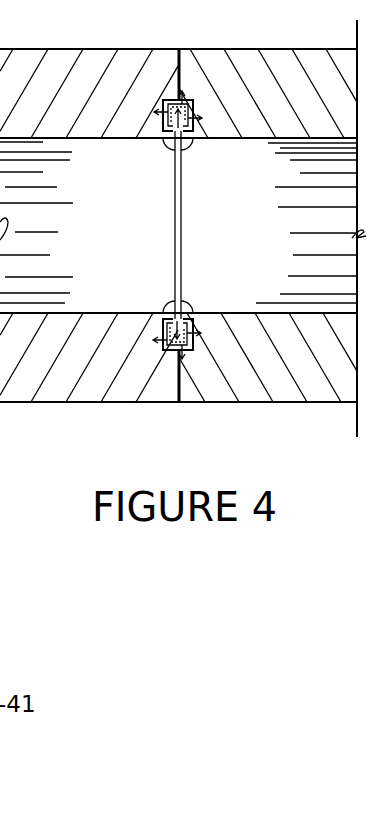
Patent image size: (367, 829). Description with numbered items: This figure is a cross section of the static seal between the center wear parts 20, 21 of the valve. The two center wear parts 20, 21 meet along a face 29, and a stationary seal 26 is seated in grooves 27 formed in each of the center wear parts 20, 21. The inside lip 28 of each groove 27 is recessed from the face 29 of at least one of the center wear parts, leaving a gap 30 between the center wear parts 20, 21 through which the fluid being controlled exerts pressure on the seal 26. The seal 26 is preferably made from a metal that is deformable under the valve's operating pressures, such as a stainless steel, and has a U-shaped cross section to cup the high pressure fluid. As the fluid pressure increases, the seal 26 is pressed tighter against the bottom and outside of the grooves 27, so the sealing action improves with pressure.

The center wear part 20 is at (75, 403).
The center wear part 21 is at (208, 403).
The stationary seal 26 is at (163, 117).
The groove 27 is at (163, 104).
The inside lip 28 is at (169, 142).
The face 29 is at (178, 83).
The gap 30 is at (182, 172).